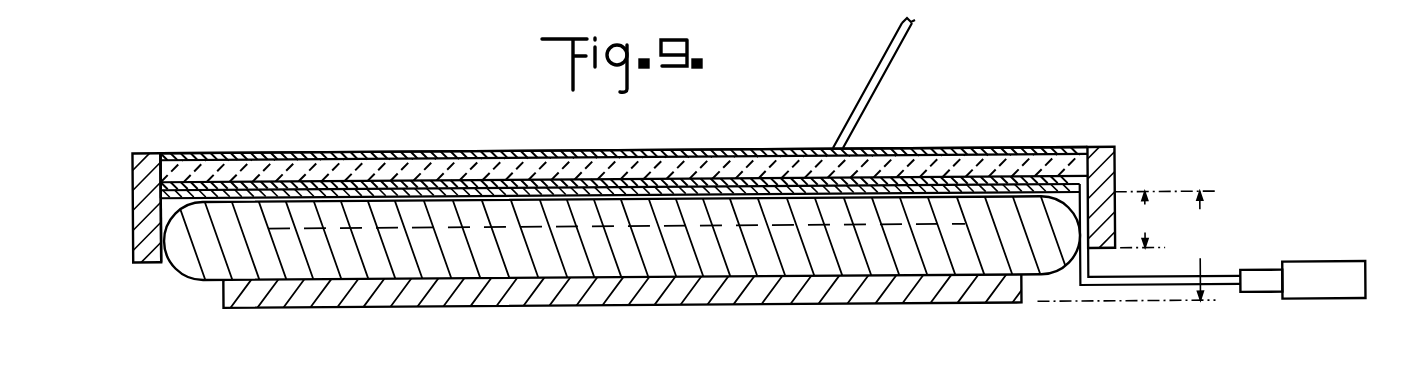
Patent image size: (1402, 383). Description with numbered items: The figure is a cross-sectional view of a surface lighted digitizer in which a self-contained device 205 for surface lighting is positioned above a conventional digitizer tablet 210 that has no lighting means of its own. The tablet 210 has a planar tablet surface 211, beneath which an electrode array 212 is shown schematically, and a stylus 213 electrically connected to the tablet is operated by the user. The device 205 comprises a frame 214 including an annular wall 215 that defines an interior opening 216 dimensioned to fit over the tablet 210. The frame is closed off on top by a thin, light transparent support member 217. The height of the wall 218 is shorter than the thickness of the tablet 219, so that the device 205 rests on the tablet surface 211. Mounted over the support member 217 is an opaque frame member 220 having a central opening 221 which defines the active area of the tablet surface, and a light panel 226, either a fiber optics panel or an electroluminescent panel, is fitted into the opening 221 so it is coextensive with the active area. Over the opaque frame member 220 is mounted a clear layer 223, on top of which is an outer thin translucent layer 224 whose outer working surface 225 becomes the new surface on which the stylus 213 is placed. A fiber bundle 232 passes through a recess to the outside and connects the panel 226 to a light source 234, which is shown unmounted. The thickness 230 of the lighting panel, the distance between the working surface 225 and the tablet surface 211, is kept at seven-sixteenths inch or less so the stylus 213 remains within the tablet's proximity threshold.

The device for surface lighting 205 is at (119, 166).
The digitizer tablet 210 is at (1047, 280).
The tablet surface 211 is at (333, 200).
The electrode array 212 is at (405, 157).
The stylus 213 is at (883, 60).
The frame 214 is at (133, 198).
The annular wall 215 is at (140, 232).
The interior opening 216 is at (1083, 197).
The support member 217 is at (194, 185).
The height of the wall 218 is at (1165, 219).
The thickness of the tablet 219 is at (1128, 246).
The opaque frame member 220 is at (221, 190).
The central opening 221 is at (272, 158).
The clear layer 223 is at (927, 165).
The translucent layer 224 is at (1023, 150).
The working surface 225 is at (665, 152).
The light panel 226 is at (583, 188).
The thickness of the lighting panel 230 is at (480, 195).
The fiber bundle 232 is at (1225, 285).
The light source 234 is at (1337, 277).